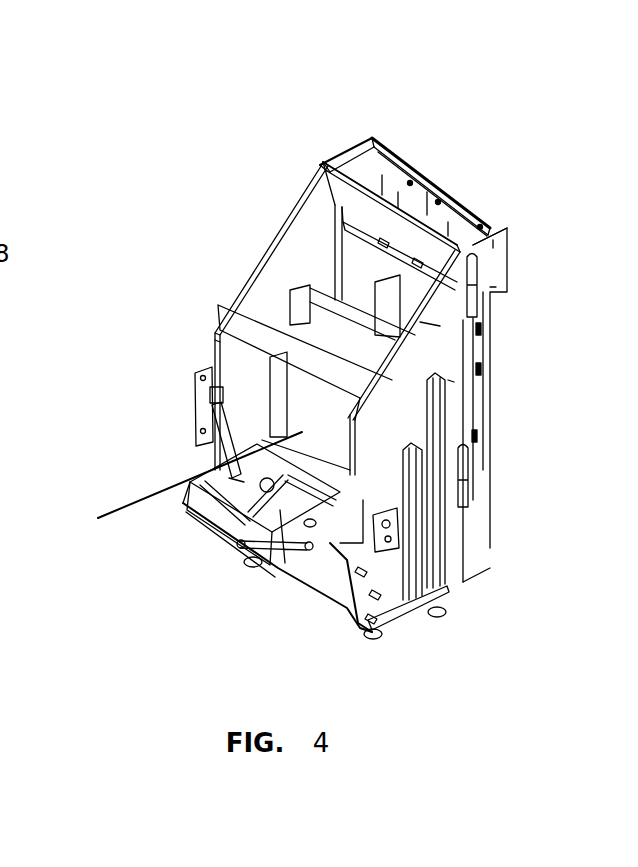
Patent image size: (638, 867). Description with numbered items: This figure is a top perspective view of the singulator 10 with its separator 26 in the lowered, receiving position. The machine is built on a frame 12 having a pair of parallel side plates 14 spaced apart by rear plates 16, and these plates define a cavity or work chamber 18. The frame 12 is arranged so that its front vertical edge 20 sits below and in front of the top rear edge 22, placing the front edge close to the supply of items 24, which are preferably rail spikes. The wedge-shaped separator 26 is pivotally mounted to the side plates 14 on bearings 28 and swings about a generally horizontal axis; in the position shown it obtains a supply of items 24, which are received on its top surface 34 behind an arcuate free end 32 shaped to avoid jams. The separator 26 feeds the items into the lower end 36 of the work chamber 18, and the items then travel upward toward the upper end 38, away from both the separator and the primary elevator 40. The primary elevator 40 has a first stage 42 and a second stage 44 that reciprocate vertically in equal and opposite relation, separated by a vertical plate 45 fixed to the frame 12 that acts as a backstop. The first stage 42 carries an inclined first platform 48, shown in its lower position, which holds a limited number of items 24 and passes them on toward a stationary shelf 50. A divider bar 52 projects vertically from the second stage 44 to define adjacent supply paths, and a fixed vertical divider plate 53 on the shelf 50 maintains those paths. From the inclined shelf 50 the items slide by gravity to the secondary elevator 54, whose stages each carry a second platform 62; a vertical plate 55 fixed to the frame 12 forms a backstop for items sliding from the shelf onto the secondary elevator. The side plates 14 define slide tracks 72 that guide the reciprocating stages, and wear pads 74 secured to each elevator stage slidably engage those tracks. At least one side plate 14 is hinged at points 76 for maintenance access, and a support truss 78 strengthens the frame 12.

The singulator 10 is at (432, 108).
The frame 12 is at (478, 236).
The side plates 14 is at (307, 293).
The rear plates 16 is at (437, 186).
The work chamber 18 is at (195, 368).
The front vertical edge 20 is at (215, 345).
The top rear edge 22 is at (333, 205).
The items 24 is at (192, 468).
The separator 26 is at (195, 520).
The bearings 28 is at (392, 541).
The free end 32 is at (330, 570).
The top surface 34 is at (345, 543).
The lower end 36 is at (210, 442).
The upper end 38 is at (382, 154).
The primary elevator 40 is at (323, 453).
The first stage 42 is at (218, 303).
The second stage 44 is at (309, 350).
The vertical plate 45 is at (318, 418).
The first platform 48 is at (193, 493).
The stationary shelf 50 is at (323, 290).
The divider bar 52 is at (360, 345).
The vertical divider plate 53 is at (420, 322).
The secondary elevator 54 is at (264, 200).
The vertical plate 55 is at (360, 277).
The second platform 62 is at (328, 282).
The slide tracks 72 is at (417, 433).
The wear pads 74 is at (455, 503).
The hinge points 76 is at (478, 285).
The support truss 78 is at (458, 220).